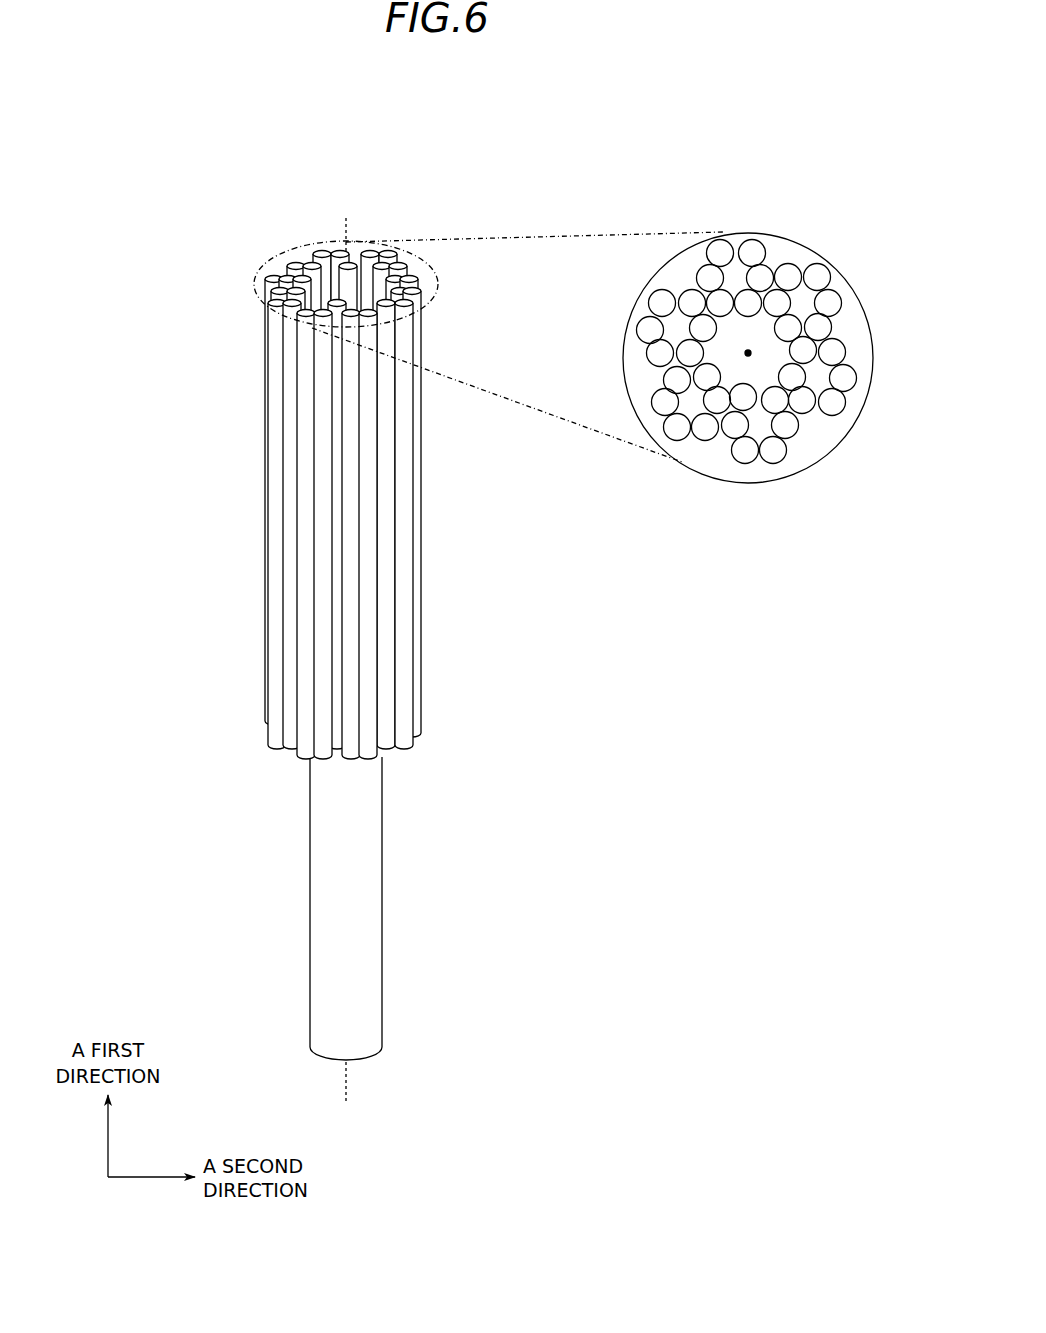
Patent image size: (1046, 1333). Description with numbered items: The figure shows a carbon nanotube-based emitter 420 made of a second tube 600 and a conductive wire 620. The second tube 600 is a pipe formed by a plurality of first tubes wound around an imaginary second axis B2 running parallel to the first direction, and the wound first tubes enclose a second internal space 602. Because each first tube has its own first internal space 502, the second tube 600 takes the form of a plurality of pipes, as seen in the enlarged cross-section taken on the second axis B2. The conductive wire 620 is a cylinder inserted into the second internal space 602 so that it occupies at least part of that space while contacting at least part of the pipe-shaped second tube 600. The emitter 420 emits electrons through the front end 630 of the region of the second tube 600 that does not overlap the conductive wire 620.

The emitter 420 is at (688, 314).
The second tube 600 is at (404, 475).
The second internal space 602 is at (352, 290).
The conductive wire 620 is at (370, 826).
The front end 630 is at (437, 278).
The first internal space 502 is at (731, 327).
The second axis B2 is at (748, 353).